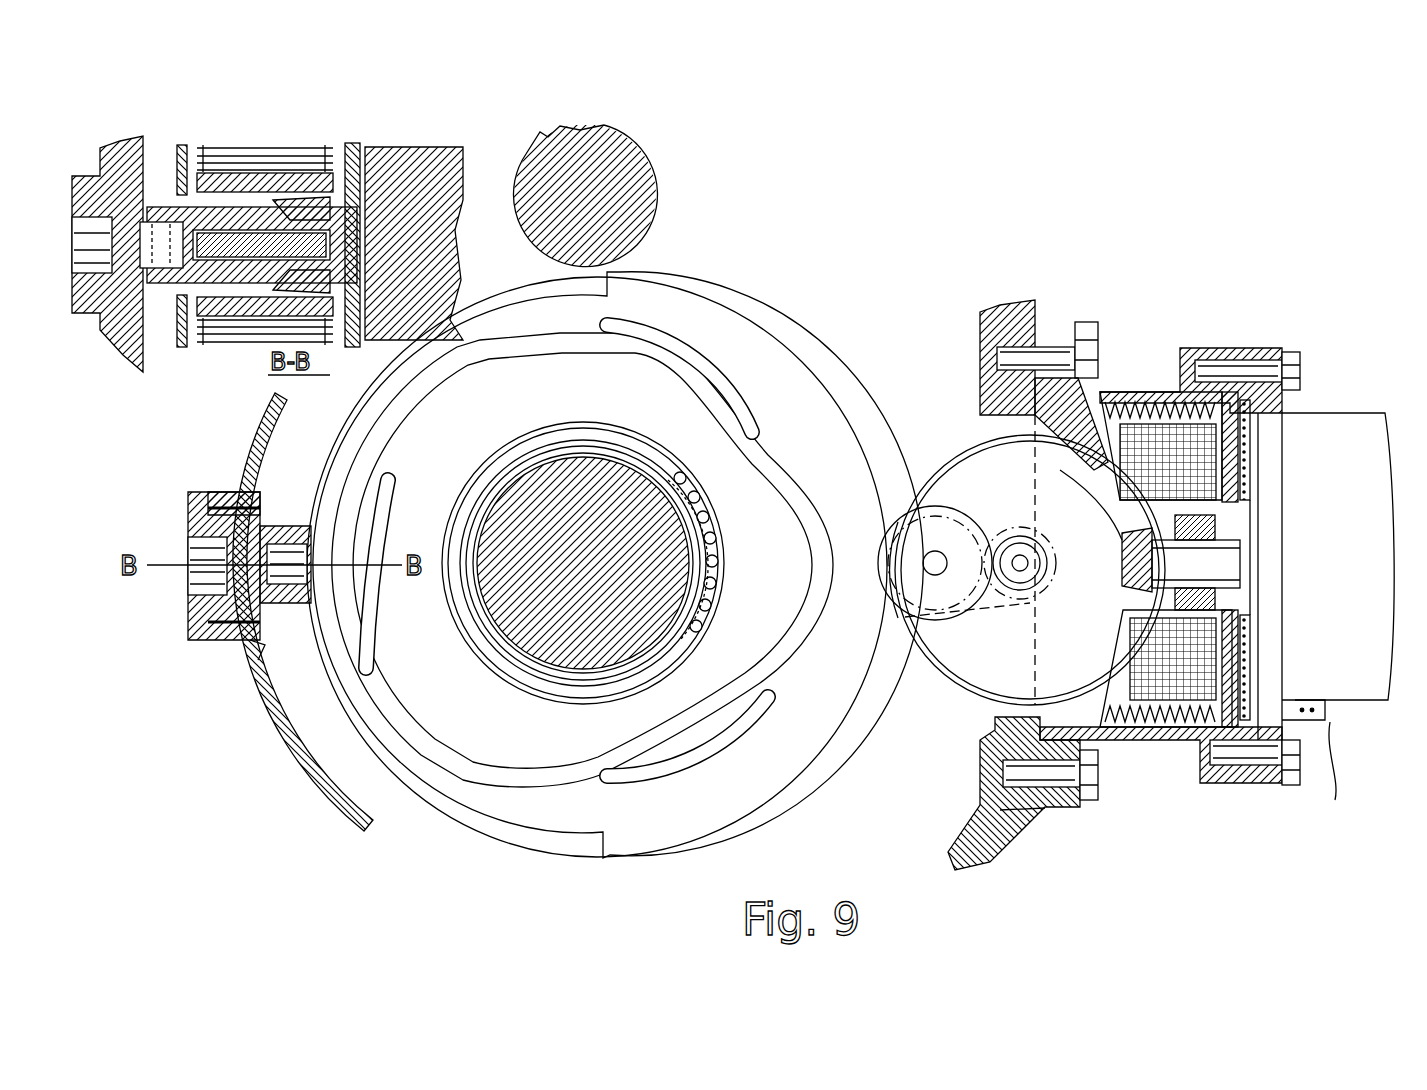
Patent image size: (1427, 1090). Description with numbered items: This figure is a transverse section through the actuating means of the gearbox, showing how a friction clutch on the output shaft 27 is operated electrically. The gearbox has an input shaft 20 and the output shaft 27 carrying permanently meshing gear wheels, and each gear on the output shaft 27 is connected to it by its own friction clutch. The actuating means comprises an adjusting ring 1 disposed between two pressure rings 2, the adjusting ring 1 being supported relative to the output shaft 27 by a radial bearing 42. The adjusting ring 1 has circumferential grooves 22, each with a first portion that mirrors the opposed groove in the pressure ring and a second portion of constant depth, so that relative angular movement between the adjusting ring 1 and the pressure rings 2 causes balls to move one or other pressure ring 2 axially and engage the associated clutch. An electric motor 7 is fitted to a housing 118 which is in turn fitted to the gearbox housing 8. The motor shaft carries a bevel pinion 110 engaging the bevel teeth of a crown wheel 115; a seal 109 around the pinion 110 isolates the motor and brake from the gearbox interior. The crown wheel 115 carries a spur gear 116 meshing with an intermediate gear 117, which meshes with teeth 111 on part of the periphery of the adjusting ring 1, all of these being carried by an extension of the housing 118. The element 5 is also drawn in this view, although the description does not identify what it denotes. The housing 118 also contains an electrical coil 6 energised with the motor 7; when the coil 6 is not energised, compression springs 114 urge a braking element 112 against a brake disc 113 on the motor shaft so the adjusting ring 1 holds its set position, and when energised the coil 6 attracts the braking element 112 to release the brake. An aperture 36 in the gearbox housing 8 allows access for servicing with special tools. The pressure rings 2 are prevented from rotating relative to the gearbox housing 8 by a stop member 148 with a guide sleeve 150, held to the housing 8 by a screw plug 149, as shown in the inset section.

The adjusting ring 1 is at (540, 823).
The pressure rings 2 is at (262, 280).
The rotor 5 is at (937, 440).
The electrical coil 6 is at (1140, 438).
The electric motor 7 is at (1340, 425).
The gearbox housing 8 is at (289, 741).
The input shaft 20 is at (640, 190).
The grooves 22 is at (690, 368).
The output shaft 27 is at (553, 657).
The aperture 36 is at (1010, 700).
The radial bearing 42 is at (708, 608).
The seal 109 is at (1235, 600).
The bevel pinion 110 is at (1120, 548).
The teeth 111 is at (660, 845).
The braking element 112 is at (1230, 760).
The brake disc 113 is at (1245, 680).
The compression springs 114 is at (1170, 398).
The crown wheel 115 is at (977, 672).
The spur gear 116 is at (1010, 585).
The intermediate gear 117 is at (893, 600).
The housing 118 is at (1060, 800).
The stop member 148 is at (256, 490).
The screw plug 149 is at (190, 635).
The guide sleeve 150 is at (249, 657).